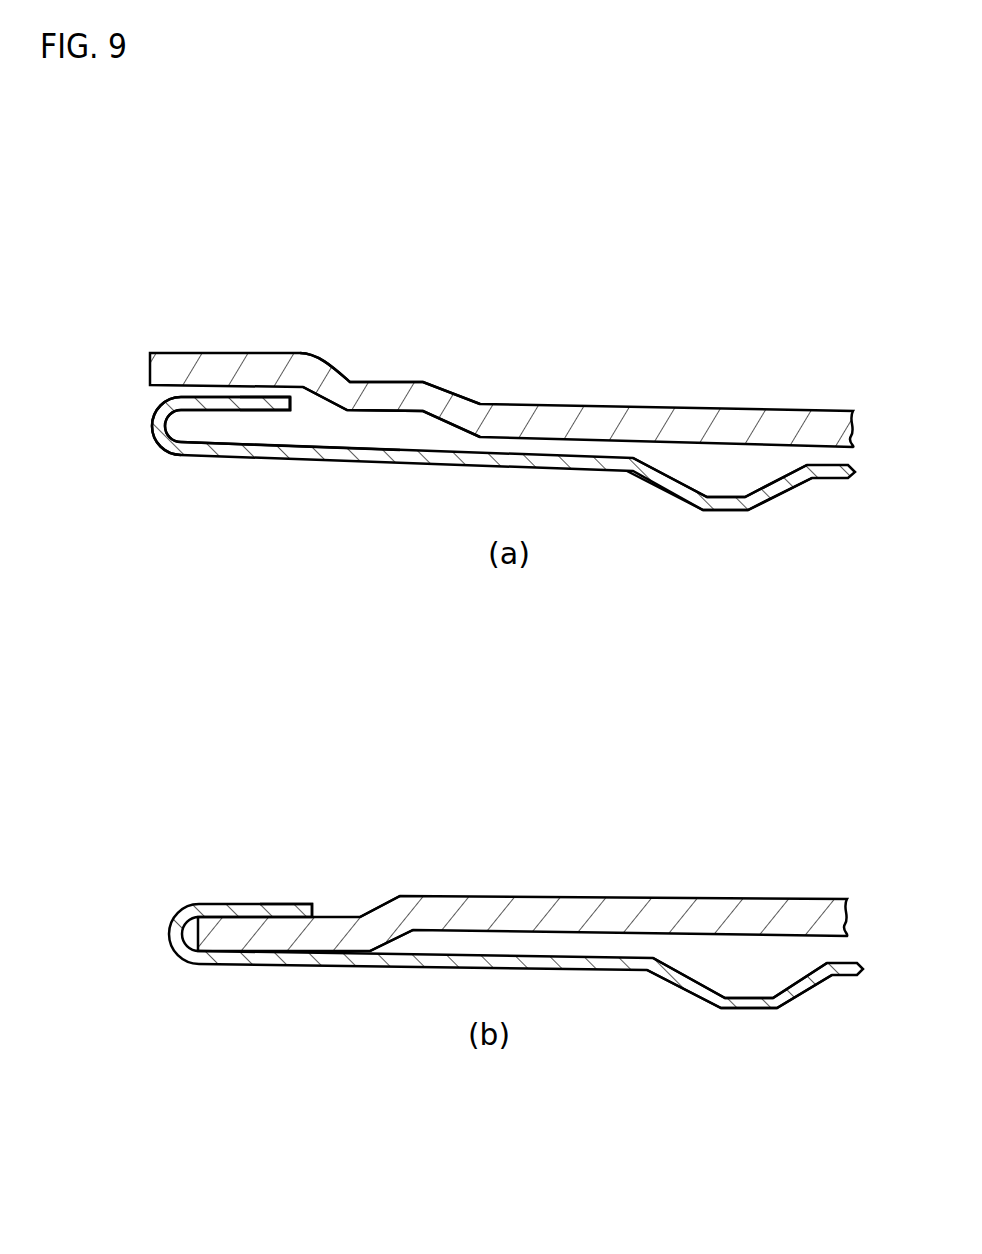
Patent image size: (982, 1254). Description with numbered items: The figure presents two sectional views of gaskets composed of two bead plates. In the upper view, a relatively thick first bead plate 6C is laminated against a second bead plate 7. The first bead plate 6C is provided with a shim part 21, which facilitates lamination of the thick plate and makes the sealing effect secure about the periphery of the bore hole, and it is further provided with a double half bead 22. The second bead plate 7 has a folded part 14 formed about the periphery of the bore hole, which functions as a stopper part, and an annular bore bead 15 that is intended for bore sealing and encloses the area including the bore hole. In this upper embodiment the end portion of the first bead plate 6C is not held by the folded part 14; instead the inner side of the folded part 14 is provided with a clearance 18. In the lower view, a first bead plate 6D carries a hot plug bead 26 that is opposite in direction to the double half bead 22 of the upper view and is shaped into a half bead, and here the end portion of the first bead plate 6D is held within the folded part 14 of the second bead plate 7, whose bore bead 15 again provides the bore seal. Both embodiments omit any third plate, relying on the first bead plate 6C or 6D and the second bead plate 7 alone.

The first bead plate 6C is at (826, 410).
The first bead plate 6D is at (716, 893).
The second bead plate 7 is at (838, 480).
The folded part 14 is at (257, 398).
The bore bead 15 is at (737, 512).
The clearance 18 is at (243, 435).
The shim part 21 is at (228, 355).
The double half bead 22 is at (432, 392).
The hot plug bead 26 is at (392, 913).